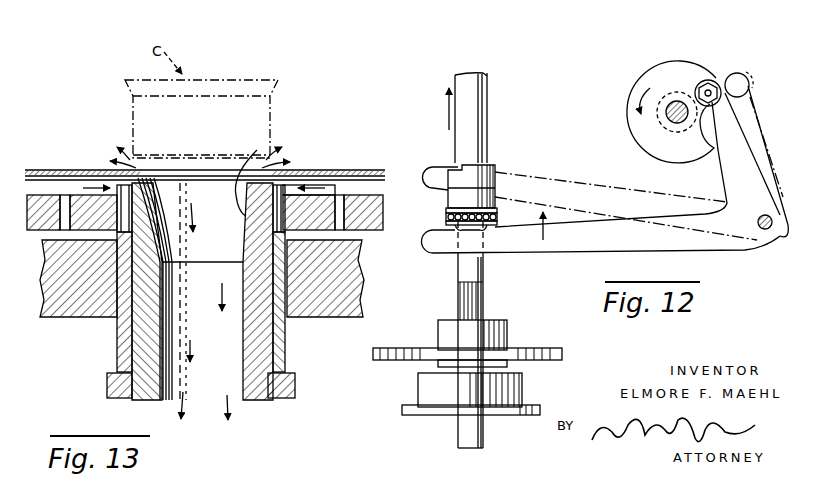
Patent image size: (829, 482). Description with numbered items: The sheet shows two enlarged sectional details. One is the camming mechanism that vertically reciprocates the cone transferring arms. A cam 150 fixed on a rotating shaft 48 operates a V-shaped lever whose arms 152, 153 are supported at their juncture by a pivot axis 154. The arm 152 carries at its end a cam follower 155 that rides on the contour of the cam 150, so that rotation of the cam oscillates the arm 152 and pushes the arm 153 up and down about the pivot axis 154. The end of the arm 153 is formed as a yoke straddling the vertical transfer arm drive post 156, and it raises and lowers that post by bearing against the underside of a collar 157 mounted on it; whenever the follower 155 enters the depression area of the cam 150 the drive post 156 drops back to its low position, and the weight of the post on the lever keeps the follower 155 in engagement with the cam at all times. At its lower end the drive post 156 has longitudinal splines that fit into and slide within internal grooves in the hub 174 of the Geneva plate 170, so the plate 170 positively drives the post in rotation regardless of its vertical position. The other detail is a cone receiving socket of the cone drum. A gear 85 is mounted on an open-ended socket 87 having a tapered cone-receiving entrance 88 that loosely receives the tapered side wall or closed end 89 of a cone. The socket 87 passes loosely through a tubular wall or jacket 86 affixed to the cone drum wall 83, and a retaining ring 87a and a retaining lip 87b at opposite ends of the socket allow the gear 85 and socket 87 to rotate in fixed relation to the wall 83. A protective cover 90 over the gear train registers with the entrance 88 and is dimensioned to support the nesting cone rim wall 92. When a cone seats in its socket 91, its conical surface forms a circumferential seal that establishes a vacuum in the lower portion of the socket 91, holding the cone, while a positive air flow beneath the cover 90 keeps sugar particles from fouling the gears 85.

In FIG. 12, the rotating shaft 48 is at (667, 117).
In FIG. 12, the cam 150 is at (669, 70).
In FIG. 12, the arm 152 is at (752, 168).
In FIG. 12, the arm 153 is at (518, 244).
In FIG. 12, the pivot axis 154 is at (770, 229).
In FIG. 12, the cam follower 155 is at (718, 84).
In FIG. 12, the transfer arm drive post 156 is at (483, 101).
In FIG. 12, the collar 157 is at (483, 180).
In FIG. 12, the Geneva plate 170 is at (536, 352).
In FIG. 12, the hub 174 is at (500, 326).
In FIG. 13, the cone drum wall 83 is at (63, 320).
In FIG. 13, the gear 85 is at (77, 196).
In FIG. 13, the tubular wall or jacket 86 is at (283, 330).
In FIG. 13, the socket 87 is at (142, 354).
In FIG. 13, the retaining ring 87a is at (296, 393).
In FIG. 13, the retaining lip 87b is at (334, 220).
In FIG. 13, the tapered cone-receiving entrance 88 is at (263, 159).
In FIG. 13, the tapered side wall or closed end 89 is at (180, 200).
In FIG. 13, the protective cover 90 is at (323, 170).
In FIG. 13, the socket 91 is at (247, 217).
In FIG. 13, the cone rim wall 92 is at (270, 118).